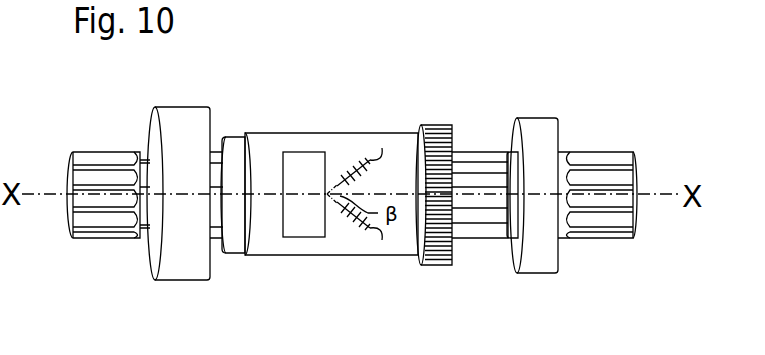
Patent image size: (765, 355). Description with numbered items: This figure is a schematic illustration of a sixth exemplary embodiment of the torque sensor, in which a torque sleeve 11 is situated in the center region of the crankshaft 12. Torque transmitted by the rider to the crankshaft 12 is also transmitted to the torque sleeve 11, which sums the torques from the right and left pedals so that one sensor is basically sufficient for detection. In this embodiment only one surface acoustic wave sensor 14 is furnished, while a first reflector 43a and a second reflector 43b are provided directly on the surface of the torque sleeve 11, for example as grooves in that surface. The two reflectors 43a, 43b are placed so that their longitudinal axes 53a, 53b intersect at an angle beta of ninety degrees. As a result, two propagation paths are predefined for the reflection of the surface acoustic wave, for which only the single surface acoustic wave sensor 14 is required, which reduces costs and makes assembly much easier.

The torque sleeve 11 is at (263, 145).
The crankshaft 12 is at (487, 172).
The surface acoustic wave sensor 14 is at (313, 157).
The first reflector 43a is at (339, 158).
The second reflector 43b is at (340, 232).
The longitudinal axis 53a is at (382, 148).
The longitudinal axis 53b is at (382, 240).